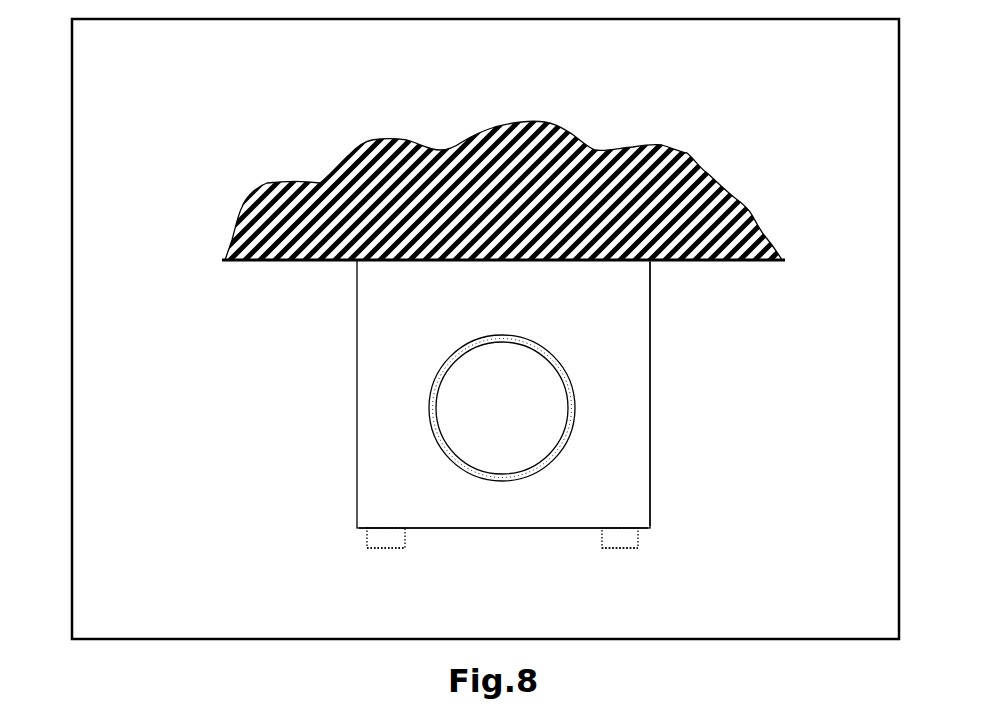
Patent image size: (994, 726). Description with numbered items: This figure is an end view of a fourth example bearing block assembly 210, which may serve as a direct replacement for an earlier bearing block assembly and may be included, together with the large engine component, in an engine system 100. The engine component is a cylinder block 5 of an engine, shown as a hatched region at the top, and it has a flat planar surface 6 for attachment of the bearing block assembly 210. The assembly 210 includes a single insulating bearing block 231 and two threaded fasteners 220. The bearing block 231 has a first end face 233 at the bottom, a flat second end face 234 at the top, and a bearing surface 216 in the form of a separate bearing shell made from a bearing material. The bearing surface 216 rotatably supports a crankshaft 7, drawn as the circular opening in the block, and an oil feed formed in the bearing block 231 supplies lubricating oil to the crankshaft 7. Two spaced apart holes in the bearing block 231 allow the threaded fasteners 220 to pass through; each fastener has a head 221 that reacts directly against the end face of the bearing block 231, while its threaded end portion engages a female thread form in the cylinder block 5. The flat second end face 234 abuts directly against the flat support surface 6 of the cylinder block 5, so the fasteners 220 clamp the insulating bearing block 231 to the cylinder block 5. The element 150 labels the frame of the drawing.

The frame 150 is at (76, 19).
The engine system 100 is at (122, 118).
The cylinder block 5 is at (242, 205).
The flat planar surface 6 is at (262, 260).
The crankshaft 7 is at (437, 387).
The bearing block assembly 210 is at (652, 482).
The bearing surface 216 is at (455, 352).
The threaded fastener 220 is at (368, 548).
The head 221 is at (388, 548).
The insulating bearing block 231 is at (648, 365).
The first end face 233 is at (463, 528).
The second end face 234 is at (597, 258).